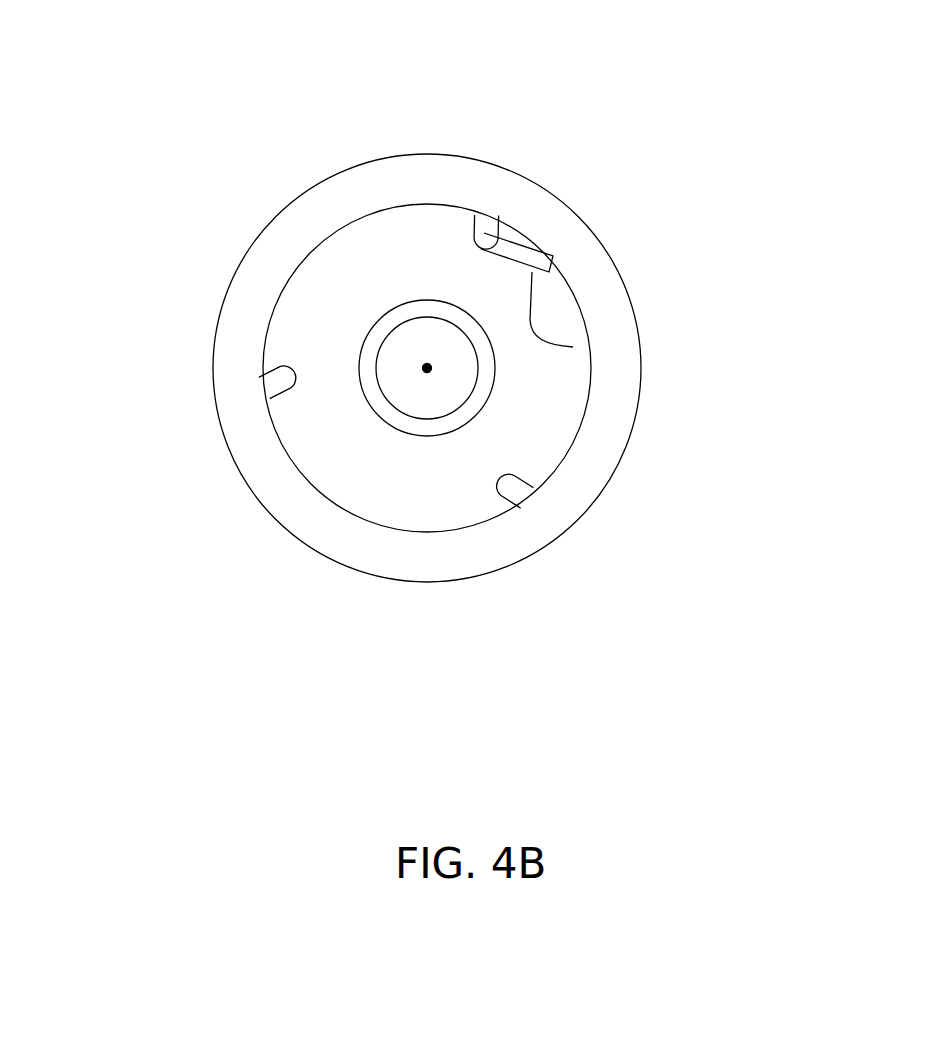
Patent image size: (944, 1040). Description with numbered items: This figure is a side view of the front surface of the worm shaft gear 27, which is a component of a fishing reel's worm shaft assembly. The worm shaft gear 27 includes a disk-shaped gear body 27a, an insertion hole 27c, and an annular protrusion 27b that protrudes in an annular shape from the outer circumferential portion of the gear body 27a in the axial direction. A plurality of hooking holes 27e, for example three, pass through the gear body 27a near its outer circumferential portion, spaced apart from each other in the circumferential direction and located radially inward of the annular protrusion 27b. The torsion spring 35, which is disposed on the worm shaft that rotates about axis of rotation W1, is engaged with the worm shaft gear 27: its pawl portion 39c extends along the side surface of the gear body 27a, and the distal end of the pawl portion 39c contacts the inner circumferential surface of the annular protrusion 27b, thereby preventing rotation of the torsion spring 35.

The worm shaft gear 27 is at (306, 156).
The gear body 27a is at (622, 262).
The annular protrusion 27b is at (438, 176).
The insertion hole 27c is at (417, 398).
The hooking hole 27e is at (487, 222).
The torsion spring 35 is at (522, 238).
The pawl portion 39c is at (573, 347).
The axis of rotation W1 is at (428, 353).